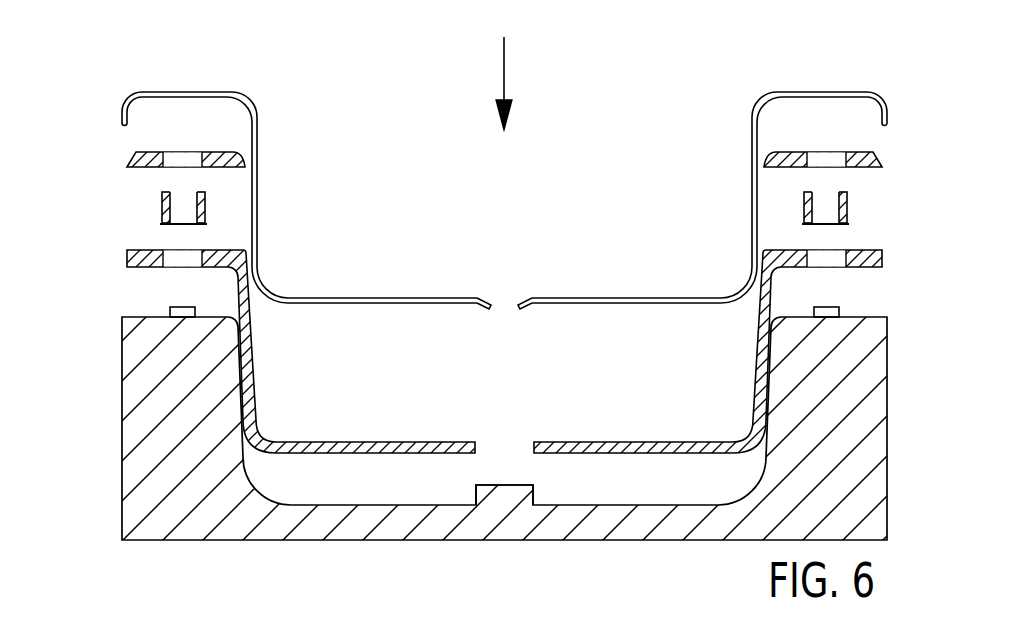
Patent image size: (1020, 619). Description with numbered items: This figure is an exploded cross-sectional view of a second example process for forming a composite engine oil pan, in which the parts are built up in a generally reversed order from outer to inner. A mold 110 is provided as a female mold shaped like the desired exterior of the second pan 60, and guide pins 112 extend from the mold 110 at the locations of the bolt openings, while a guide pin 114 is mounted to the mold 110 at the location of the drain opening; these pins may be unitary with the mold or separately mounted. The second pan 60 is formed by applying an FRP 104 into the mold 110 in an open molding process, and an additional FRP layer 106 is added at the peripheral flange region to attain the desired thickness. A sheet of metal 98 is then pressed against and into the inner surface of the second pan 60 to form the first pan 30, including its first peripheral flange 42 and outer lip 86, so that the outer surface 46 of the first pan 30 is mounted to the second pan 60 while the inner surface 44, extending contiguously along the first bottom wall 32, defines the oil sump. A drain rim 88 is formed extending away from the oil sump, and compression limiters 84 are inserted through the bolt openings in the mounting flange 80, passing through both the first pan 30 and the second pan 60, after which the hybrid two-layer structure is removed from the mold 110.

The first pan 30 is at (302, 170).
The sheet of metal 98 is at (268, 125).
The first peripheral flange 42 is at (213, 91).
The outer lip 86 is at (122, 117).
The mounting flange 80 is at (143, 70).
The second pan 60 is at (239, 302).
The additional FRP layer 106 is at (132, 155).
The compression limiters 84 is at (162, 210).
The FRP 104 is at (266, 337).
The guide pins 112 is at (170, 313).
The mold 110 is at (465, 428).
The guide pin 114 is at (504, 485).
The first bottom wall 32 is at (644, 276).
The inner surface 44 is at (622, 297).
The outer surface 46 is at (586, 304).
The drain rim 88 is at (521, 309).